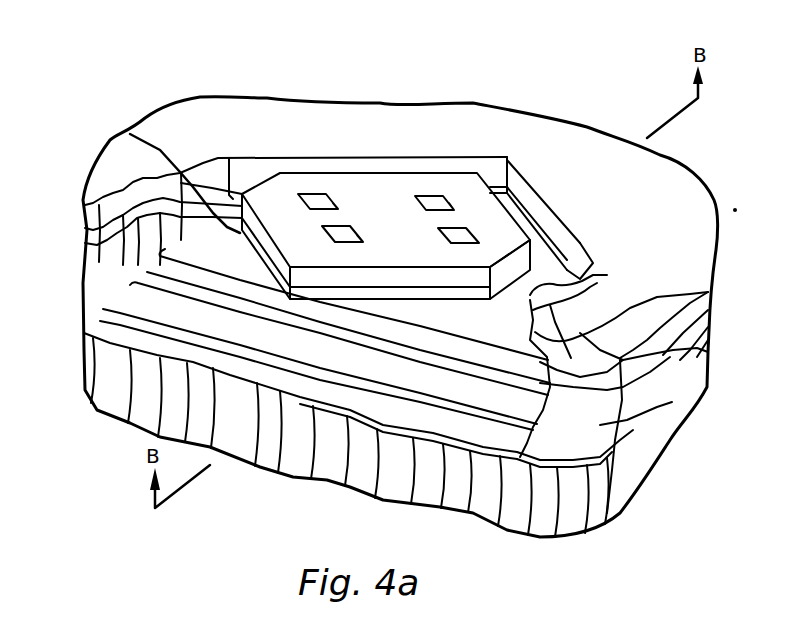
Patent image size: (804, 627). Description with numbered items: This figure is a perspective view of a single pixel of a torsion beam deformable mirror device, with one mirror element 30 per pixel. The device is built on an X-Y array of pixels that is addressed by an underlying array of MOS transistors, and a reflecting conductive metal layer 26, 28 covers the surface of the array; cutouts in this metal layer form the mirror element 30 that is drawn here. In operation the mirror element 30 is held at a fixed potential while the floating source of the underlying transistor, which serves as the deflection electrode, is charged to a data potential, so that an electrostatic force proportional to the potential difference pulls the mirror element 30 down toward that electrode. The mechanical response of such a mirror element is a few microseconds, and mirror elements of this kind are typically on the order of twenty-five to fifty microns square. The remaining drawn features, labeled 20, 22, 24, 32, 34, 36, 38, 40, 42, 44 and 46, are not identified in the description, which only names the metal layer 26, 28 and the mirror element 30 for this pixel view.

The semiconductor device assembly 20 is at (205, 68).
The substrate base 22 is at (541, 522).
The first dielectric layer 24 is at (653, 462).
The reflecting conductive metal layer 26 is at (243, 242).
The reflecting conductive metal layer 28 is at (130, 134).
The mirror element 30 is at (402, 231).
The bonding pads 32 is at (438, 185).
The cavity wall 34 is at (229, 195).
The conductor end 36 is at (590, 252).
The conductor rail 38 is at (536, 198).
The conductive traces 40 is at (128, 303).
The layer edge 42 is at (580, 340).
The layer edge 44 is at (612, 512).
The recess ledge 46 is at (557, 310).